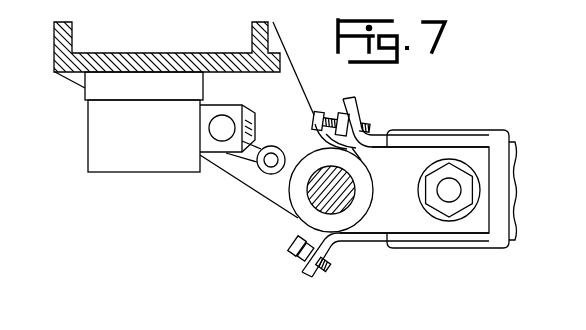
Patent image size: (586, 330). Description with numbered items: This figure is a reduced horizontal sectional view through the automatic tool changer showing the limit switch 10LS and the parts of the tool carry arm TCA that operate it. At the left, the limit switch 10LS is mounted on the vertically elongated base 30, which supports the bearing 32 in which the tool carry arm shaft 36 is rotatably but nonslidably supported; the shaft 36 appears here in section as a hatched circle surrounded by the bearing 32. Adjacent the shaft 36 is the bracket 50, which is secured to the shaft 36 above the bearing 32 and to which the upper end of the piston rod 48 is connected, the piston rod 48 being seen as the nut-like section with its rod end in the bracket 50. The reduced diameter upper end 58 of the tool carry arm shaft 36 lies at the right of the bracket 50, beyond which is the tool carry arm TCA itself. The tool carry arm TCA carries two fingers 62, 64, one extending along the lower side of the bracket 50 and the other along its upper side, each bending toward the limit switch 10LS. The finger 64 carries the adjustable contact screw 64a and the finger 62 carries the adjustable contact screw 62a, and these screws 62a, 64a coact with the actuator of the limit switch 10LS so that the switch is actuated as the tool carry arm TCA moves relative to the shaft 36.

The base 30 is at (146, 54).
The limit switch 10LS is at (165, 148).
The bearing 32 is at (276, 201).
The tool carry arm shaft 36 is at (340, 189).
The finger 64 is at (357, 98).
The adjustable contact screw 64a is at (318, 108).
The bracket 50 is at (393, 223).
The finger 62 is at (307, 277).
The adjustable contact screw 62a is at (290, 250).
The piston rod 48 is at (449, 190).
The reduced diameter upper end of tool carry arm shaft 58 is at (432, 249).
The tool carry arm TCA is at (505, 247).